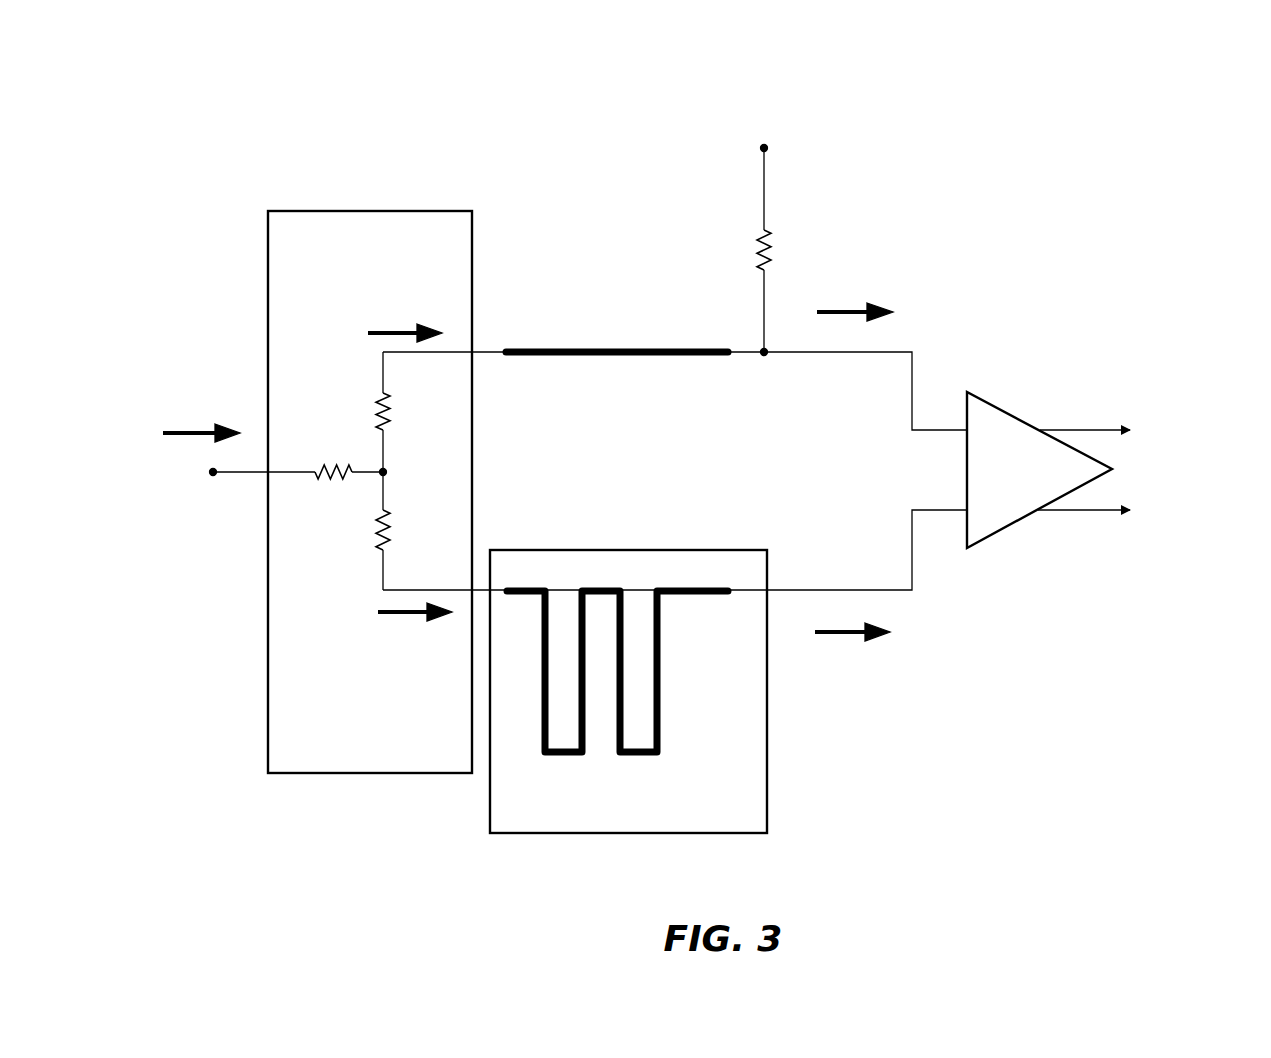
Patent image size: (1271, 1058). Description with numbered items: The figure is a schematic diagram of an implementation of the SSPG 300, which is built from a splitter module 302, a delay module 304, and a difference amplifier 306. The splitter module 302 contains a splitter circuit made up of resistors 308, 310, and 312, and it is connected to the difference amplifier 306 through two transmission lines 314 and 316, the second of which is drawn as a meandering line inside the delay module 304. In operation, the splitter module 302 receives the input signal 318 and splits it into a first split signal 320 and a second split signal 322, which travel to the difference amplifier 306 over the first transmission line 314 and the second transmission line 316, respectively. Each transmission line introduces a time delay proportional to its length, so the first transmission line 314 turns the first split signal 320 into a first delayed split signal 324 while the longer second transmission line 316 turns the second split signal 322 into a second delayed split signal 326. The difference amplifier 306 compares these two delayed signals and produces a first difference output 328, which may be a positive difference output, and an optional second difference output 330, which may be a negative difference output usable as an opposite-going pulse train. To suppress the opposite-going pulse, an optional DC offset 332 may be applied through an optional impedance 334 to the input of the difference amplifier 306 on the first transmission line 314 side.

The SSPG 300 is at (1021, 169).
The splitter module 302 is at (370, 492).
The delay module 304 is at (628, 691).
The difference amplifier 306 is at (1039, 470).
The resistor 308 is at (409, 530).
The resistor 310 is at (409, 411).
The resistor 312 is at (332, 455).
The first transmission line 314 is at (545, 352).
The second transmission line 316 is at (657, 665).
The input signal 318 is at (207, 435).
The first split signal 320 is at (390, 332).
The second split signal 322 is at (388, 614).
The first delayed split signal 324 is at (838, 312).
The second delayed split signal 326 is at (843, 634).
The first difference output 328 is at (1114, 432).
The second difference output 330 is at (1141, 530).
The DC offset 332 is at (762, 198).
The impedance 334 is at (705, 233).